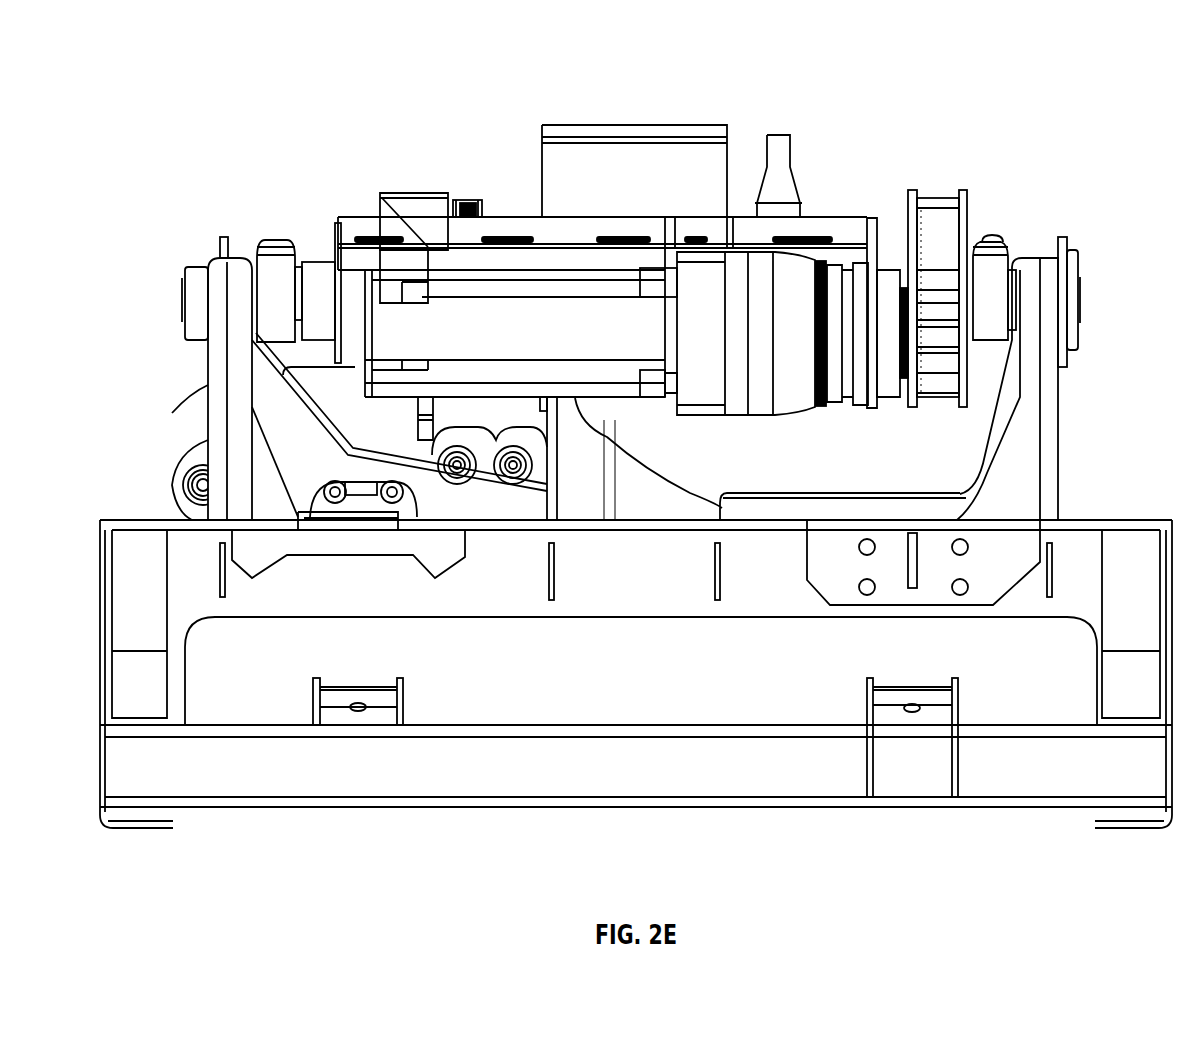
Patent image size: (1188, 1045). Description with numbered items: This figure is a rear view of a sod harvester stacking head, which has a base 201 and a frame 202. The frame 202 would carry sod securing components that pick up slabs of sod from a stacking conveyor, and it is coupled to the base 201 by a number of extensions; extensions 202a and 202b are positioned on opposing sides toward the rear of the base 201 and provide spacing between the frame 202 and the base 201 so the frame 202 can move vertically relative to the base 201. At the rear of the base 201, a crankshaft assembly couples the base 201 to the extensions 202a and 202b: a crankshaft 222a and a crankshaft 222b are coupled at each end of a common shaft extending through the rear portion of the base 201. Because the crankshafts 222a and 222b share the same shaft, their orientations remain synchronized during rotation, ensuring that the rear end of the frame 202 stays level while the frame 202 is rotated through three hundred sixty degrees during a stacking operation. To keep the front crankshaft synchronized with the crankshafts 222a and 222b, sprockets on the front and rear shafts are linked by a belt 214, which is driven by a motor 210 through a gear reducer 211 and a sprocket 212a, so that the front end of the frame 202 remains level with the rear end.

The base 201 is at (908, 128).
The frame 202 is at (1173, 828).
The extension 202a is at (1060, 423).
The extension 202b is at (210, 393).
The motor 210 is at (481, 468).
The gear reducer 211 is at (760, 418).
The sprocket 212a is at (907, 208).
The belt 214 is at (937, 197).
The crankshaft 222a is at (989, 228).
The crankshaft 222b is at (275, 228).